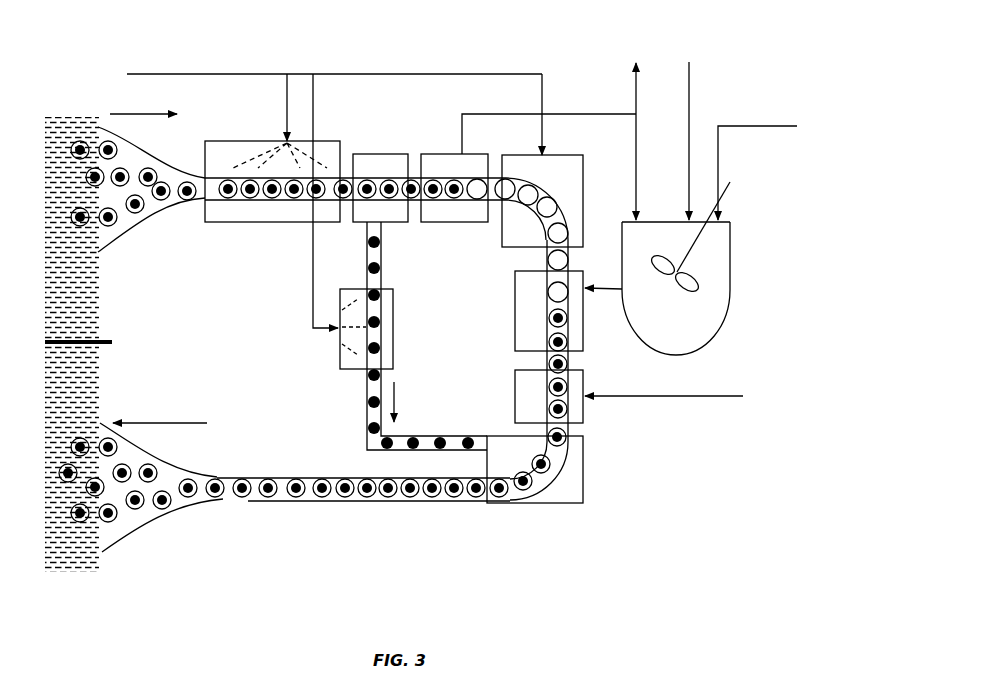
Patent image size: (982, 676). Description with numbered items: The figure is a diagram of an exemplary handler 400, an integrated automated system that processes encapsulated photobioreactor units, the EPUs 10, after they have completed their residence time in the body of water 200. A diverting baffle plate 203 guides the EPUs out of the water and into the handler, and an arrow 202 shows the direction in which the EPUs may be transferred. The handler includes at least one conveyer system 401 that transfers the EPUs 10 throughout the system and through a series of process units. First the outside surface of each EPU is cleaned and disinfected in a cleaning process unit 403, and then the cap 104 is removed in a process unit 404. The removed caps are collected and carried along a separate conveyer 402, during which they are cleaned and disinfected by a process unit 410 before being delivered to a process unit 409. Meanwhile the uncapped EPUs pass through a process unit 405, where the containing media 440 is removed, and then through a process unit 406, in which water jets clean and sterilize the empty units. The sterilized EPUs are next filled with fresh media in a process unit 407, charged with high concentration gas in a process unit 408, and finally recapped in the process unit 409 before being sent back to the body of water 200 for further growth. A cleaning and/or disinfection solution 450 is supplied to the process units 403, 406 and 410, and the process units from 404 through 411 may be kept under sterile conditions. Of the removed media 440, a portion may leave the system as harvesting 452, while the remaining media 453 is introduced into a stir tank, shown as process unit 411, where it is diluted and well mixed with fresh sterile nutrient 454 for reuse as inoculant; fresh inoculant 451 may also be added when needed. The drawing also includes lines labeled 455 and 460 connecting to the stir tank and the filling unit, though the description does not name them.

The EPUs 10 is at (143, 212).
The cap 104 is at (368, 407).
The body of water 200 is at (88, 264).
The arrow 202 is at (158, 257).
The diverting baffle plate 203 is at (113, 345).
The handler 400 is at (691, 492).
The conveyer system 401 is at (208, 506).
The conveyer 402 is at (383, 265).
The cleaning process unit 403 is at (323, 142).
The process unit 404 is at (383, 153).
The process unit 405 is at (439, 153).
The process unit 406 is at (558, 153).
The process unit 407 is at (586, 350).
The process unit 408 is at (586, 417).
The process unit 409 is at (545, 508).
The process unit 410 is at (337, 356).
The process unit 411 is at (733, 320).
The containing media 440 is at (502, 113).
The cleaning and/or disinfection solution 450 is at (205, 73).
The fresh inoculant 451 is at (765, 122).
The harvesting 452 is at (640, 84).
The remaining media 453 is at (641, 152).
The fresh sterile nutrient 454 is at (692, 152).
The recirculation line 455 is at (594, 285).
The reagent inlet line 460 is at (704, 398).